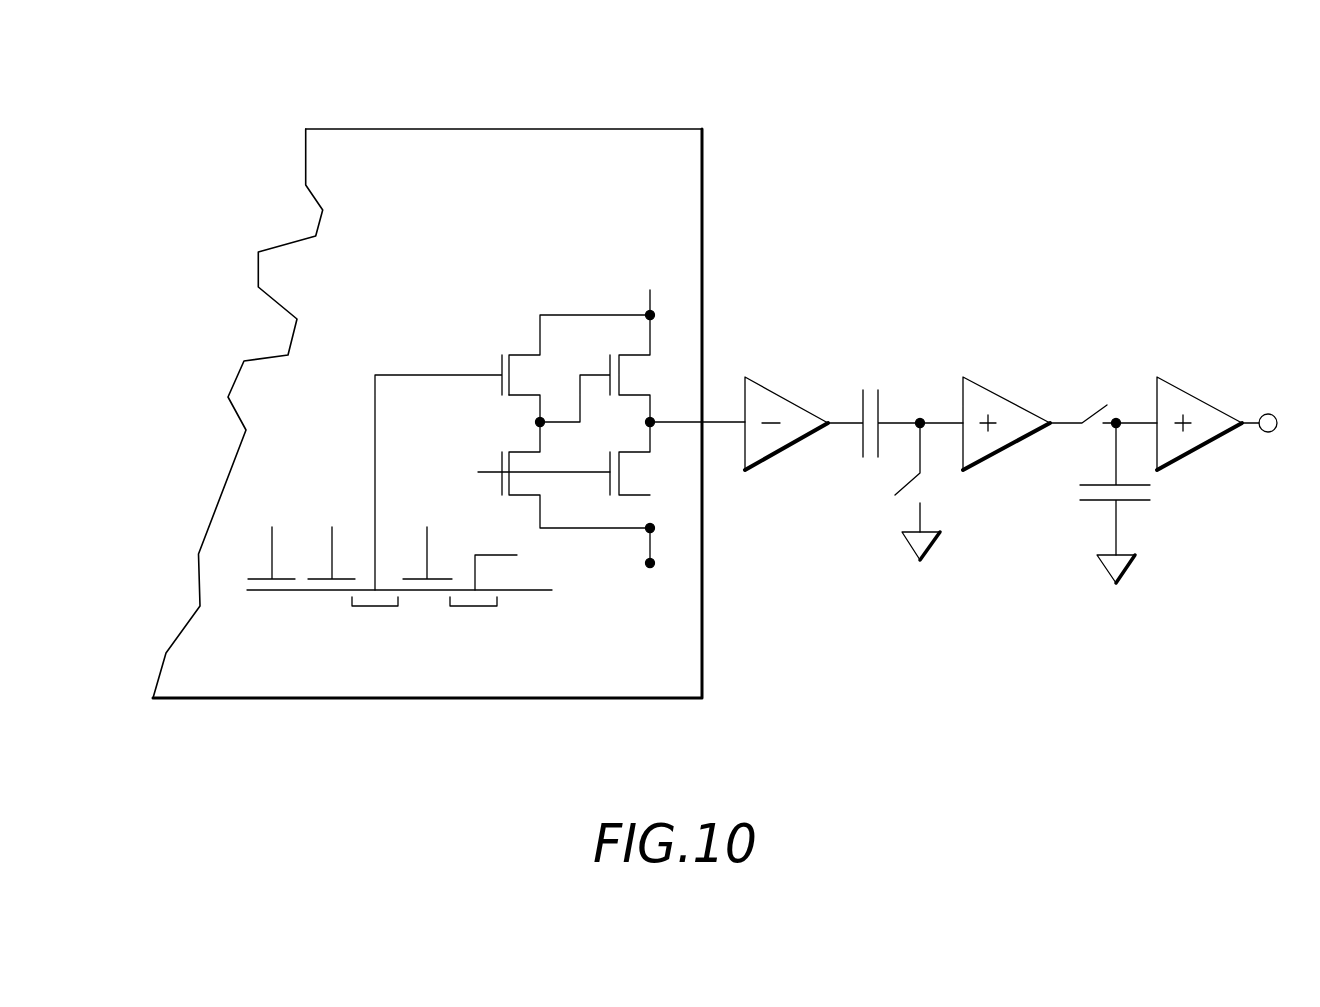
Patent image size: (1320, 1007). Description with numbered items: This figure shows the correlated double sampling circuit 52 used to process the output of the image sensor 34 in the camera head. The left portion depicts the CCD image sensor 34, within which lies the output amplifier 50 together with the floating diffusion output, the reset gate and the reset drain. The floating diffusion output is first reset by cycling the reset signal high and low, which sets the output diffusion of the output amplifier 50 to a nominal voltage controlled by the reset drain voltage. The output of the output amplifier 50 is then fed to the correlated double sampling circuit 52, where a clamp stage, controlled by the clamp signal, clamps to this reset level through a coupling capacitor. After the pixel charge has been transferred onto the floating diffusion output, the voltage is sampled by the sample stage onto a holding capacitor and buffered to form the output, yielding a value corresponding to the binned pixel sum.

The image sensor 34 is at (475, 127).
The output amplifier 50 is at (693, 252).
The correlated double sampling circuit 52 is at (1230, 303).